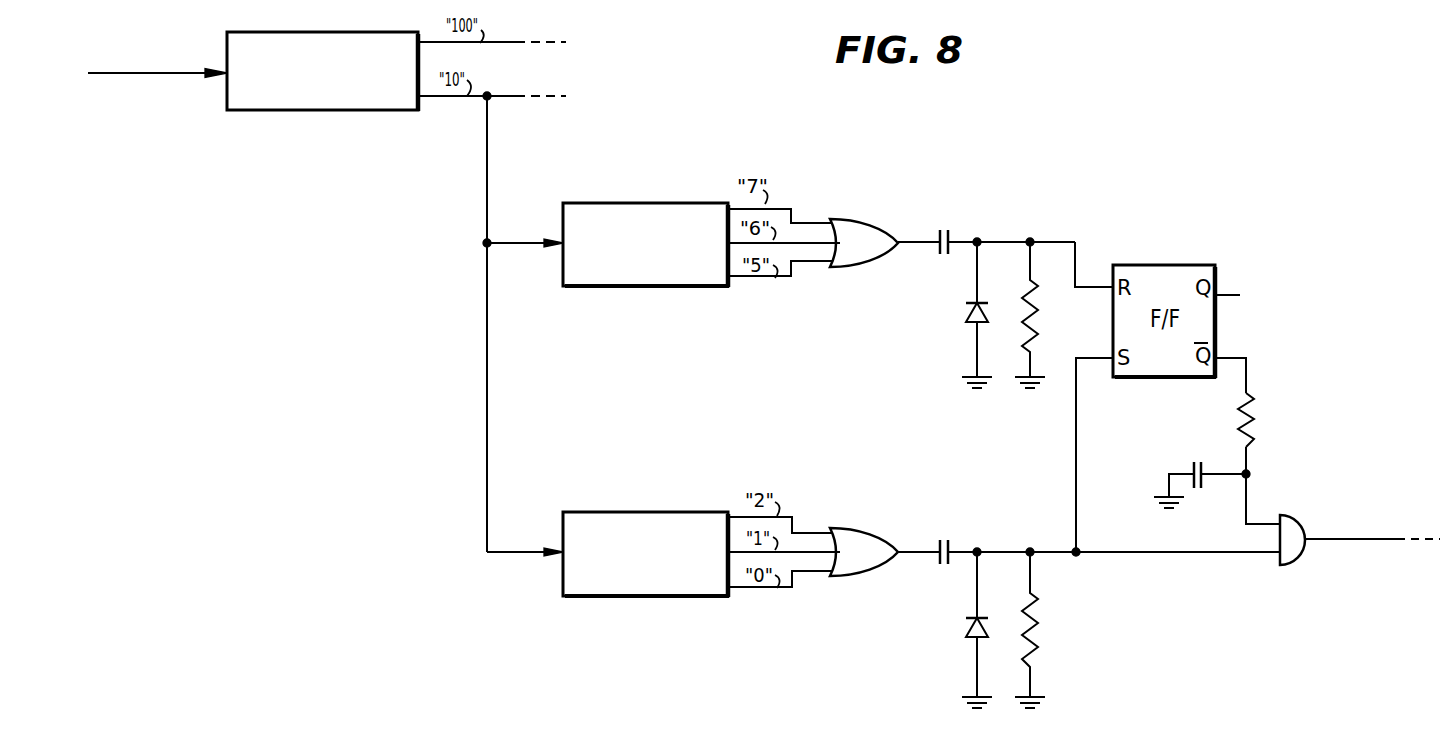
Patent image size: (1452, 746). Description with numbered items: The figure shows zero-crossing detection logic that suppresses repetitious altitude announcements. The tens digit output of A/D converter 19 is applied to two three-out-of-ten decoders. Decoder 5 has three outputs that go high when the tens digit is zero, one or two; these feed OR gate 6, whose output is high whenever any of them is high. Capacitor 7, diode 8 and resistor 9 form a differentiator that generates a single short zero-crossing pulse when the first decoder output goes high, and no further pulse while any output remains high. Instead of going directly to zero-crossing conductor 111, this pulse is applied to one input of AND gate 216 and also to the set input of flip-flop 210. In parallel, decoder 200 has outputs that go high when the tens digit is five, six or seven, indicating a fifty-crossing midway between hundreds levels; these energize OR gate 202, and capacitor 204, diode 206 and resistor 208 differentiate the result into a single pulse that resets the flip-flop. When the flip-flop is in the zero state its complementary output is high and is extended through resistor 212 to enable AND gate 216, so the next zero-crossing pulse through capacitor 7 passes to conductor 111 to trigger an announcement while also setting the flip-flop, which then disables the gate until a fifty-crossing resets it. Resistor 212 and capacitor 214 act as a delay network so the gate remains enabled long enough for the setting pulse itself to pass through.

The A/D converter 19 is at (386, 33).
The 3-out-of-10 decoder 200 is at (663, 202).
The OR gate 202 is at (874, 214).
The capacitor 204 is at (956, 224).
The diode 206 is at (968, 304).
The resistor 208 is at (1036, 300).
The flip-flop 210 is at (1244, 295).
The resistor 212 is at (1256, 404).
The capacitor 214 is at (1206, 461).
The AND gate 216 is at (1283, 567).
The 3-out-of-10 decoder 5 is at (655, 509).
The OR gate 6 is at (869, 527).
The capacitor 7 is at (956, 537).
The diode 8 is at (967, 622).
The resistor 9 is at (1037, 622).
The zero-crossing conductor 111 is at (1405, 535).